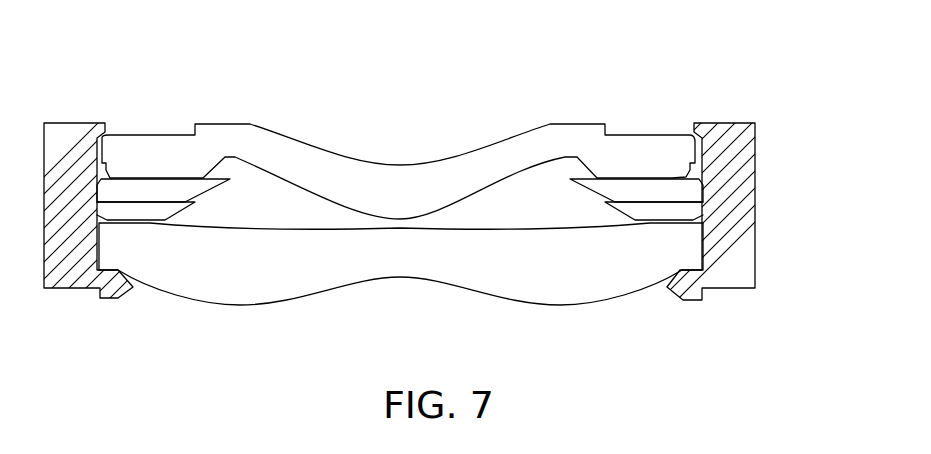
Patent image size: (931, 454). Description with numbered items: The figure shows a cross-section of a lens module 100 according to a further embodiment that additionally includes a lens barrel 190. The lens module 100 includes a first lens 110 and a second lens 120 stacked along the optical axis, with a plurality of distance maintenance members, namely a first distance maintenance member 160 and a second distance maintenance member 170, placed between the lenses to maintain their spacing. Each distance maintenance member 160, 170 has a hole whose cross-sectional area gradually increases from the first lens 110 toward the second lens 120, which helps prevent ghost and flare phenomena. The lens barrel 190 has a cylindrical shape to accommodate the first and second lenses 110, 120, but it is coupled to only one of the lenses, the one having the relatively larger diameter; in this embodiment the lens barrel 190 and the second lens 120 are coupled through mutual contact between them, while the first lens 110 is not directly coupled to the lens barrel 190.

The lens module 100 is at (752, 94).
The first lens 110 is at (698, 152).
The second lens 120 is at (698, 258).
The first distance maintenance member 160 is at (698, 190).
The second distance maintenance member 170 is at (698, 212).
The lens barrel 190 is at (730, 283).